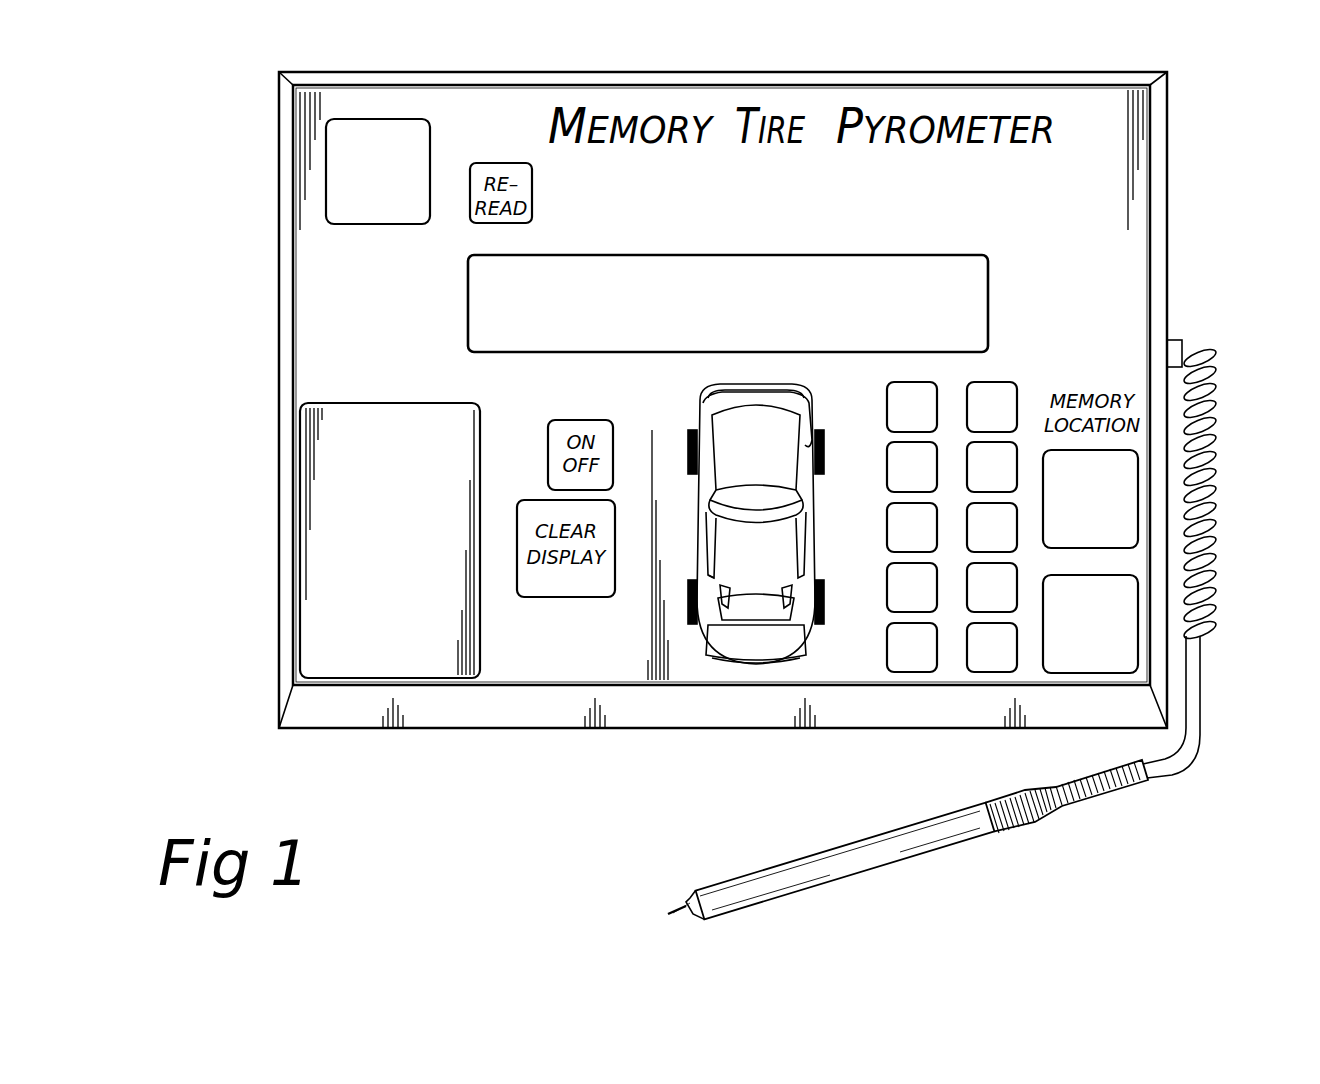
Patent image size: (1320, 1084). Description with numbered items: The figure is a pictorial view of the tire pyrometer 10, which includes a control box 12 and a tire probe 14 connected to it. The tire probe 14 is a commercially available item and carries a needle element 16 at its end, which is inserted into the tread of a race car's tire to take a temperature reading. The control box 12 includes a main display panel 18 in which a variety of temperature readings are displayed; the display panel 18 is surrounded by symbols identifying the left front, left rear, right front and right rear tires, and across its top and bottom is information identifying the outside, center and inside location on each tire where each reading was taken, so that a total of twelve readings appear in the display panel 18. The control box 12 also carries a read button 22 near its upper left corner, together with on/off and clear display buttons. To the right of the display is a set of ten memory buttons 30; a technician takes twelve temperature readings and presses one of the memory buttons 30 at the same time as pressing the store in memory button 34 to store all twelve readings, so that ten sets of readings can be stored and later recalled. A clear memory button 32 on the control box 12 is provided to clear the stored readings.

The tire pyrometer 10 is at (1180, 166).
The control box 12 is at (668, 718).
The tire probe 14 is at (824, 862).
The needle element 16 is at (676, 912).
The main display panel 18 is at (975, 262).
The read button 22 is at (335, 208).
The memory buttons 30 is at (868, 655).
The clear memory button 32 is at (1132, 462).
The store in memory button 34 is at (1104, 670).